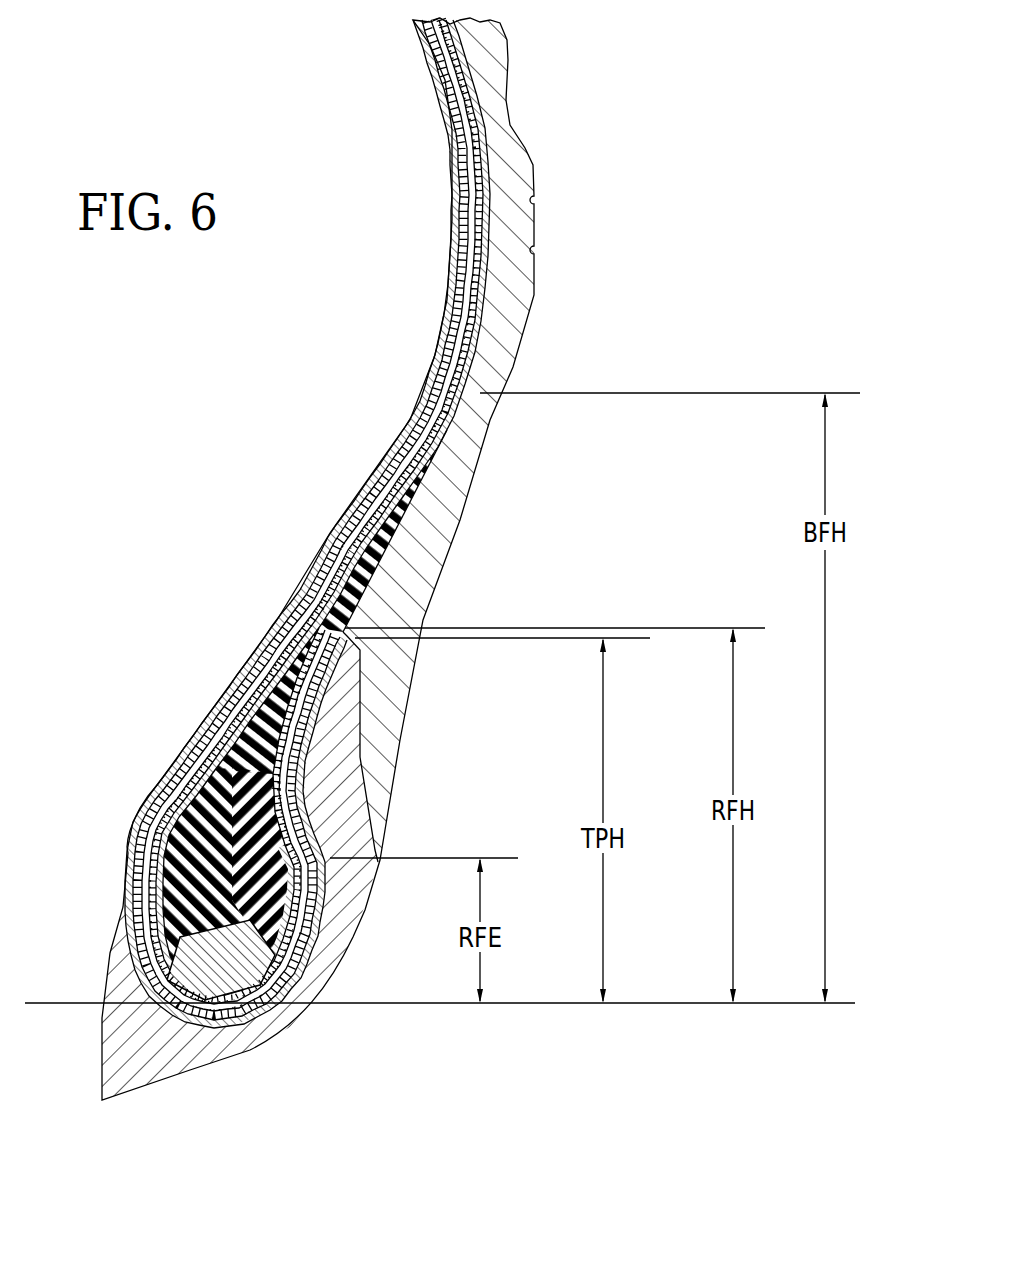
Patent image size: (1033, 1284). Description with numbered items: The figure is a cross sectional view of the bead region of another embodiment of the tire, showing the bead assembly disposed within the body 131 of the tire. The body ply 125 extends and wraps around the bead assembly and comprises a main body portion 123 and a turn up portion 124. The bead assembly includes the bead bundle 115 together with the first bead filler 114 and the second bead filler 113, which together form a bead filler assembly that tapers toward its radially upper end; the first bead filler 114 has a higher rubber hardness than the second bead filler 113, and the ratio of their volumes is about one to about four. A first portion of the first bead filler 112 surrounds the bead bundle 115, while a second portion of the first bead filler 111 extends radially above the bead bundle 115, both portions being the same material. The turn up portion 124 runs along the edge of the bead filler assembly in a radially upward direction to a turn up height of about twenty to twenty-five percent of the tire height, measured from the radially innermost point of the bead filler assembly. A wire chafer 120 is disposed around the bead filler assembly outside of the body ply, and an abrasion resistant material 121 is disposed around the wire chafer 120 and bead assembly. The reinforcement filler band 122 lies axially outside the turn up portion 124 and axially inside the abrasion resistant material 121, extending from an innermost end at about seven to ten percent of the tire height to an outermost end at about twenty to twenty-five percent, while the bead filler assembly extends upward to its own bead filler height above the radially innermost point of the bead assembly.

The second portion of the first bead filler 111 is at (217, 705).
The first portion of the first bead filler 112 is at (123, 918).
The second bead filler 113 is at (290, 600).
The first bead filler 114 is at (130, 851).
The bead bundle 115 is at (205, 958).
The wire chafer 120 is at (213, 1022).
The abrasion resistant material 121 is at (335, 812).
The reinforcement filler band 122 is at (303, 763).
The main body portion 123 is at (253, 657).
The turn up portion 124 is at (307, 708).
The body ply 125 is at (457, 300).
The body 131 is at (502, 322).